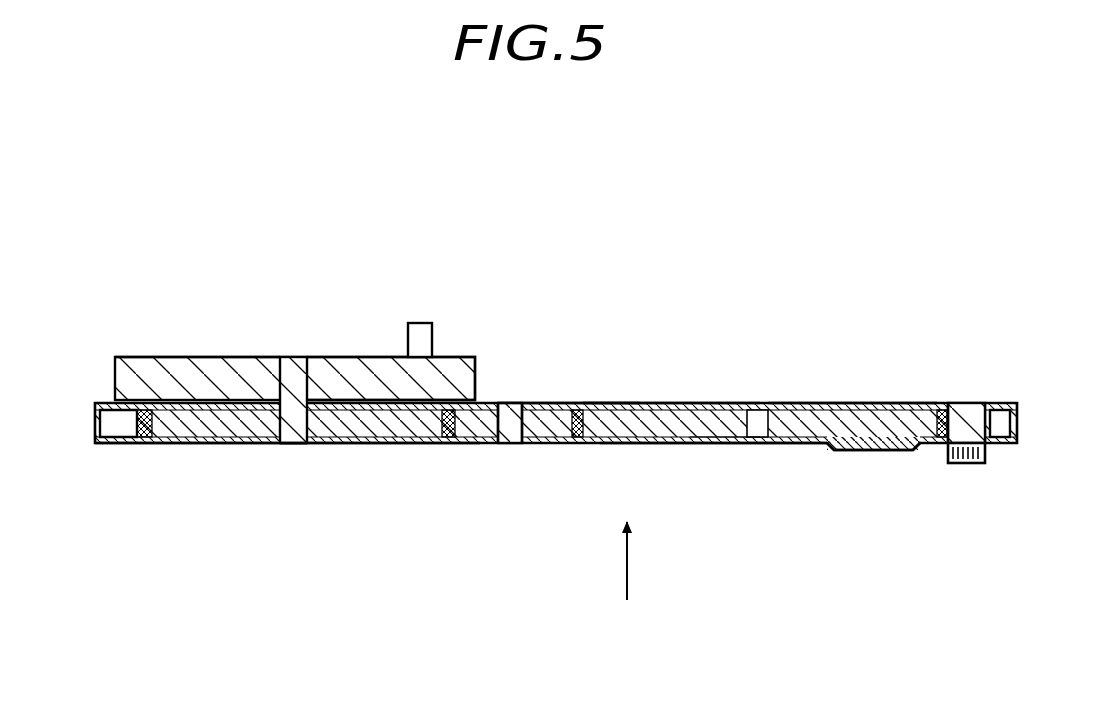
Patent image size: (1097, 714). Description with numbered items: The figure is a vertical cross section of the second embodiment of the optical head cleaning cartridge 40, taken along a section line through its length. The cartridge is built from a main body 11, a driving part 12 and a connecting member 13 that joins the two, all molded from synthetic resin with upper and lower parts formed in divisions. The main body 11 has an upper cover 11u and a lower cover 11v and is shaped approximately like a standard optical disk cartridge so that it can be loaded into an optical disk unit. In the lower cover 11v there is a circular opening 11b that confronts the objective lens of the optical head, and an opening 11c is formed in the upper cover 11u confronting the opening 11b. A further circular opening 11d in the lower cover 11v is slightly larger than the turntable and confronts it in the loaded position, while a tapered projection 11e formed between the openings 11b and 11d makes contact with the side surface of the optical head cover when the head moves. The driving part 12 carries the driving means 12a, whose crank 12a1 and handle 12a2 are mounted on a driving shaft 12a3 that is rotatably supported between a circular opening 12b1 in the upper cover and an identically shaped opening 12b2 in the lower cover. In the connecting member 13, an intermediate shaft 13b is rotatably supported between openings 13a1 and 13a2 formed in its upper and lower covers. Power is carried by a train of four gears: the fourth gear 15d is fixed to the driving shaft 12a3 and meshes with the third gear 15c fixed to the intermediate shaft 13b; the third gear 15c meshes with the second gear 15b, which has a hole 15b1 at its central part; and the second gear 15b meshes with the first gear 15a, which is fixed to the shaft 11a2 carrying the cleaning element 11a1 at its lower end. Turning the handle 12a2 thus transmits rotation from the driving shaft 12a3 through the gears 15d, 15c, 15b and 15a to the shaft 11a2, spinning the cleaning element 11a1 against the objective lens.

The cleaning cartridge 40 is at (645, 179).
The main body 11 is at (914, 313).
The cleaning element 11a1 is at (977, 464).
The shaft 11a2 is at (966, 404).
The circular opening 11b is at (947, 445).
The opening 11c is at (952, 404).
The circular opening 11d is at (718, 444).
The projection 11e is at (873, 451).
The upper cover 11u is at (840, 404).
The lower cover 11v is at (662, 446).
The driving part 12 is at (97, 378).
The driving means 12a is at (486, 294).
The crank 12a1 is at (192, 356).
The handle 12a2 is at (427, 322).
The driving shaft 12a3 is at (302, 356).
The circular opening 12b1 is at (292, 380).
The opening 12b2 is at (286, 444).
The connecting member 13 is at (540, 388).
The opening 13a1 is at (505, 404).
The opening 13a2 is at (505, 444).
The intermediate shaft 13b is at (514, 444).
The first gear 15a is at (1019, 407).
The second gear 15b is at (634, 404).
The hole 15b1 is at (766, 444).
The third gear 15c is at (558, 404).
The fourth gear 15d is at (360, 446).